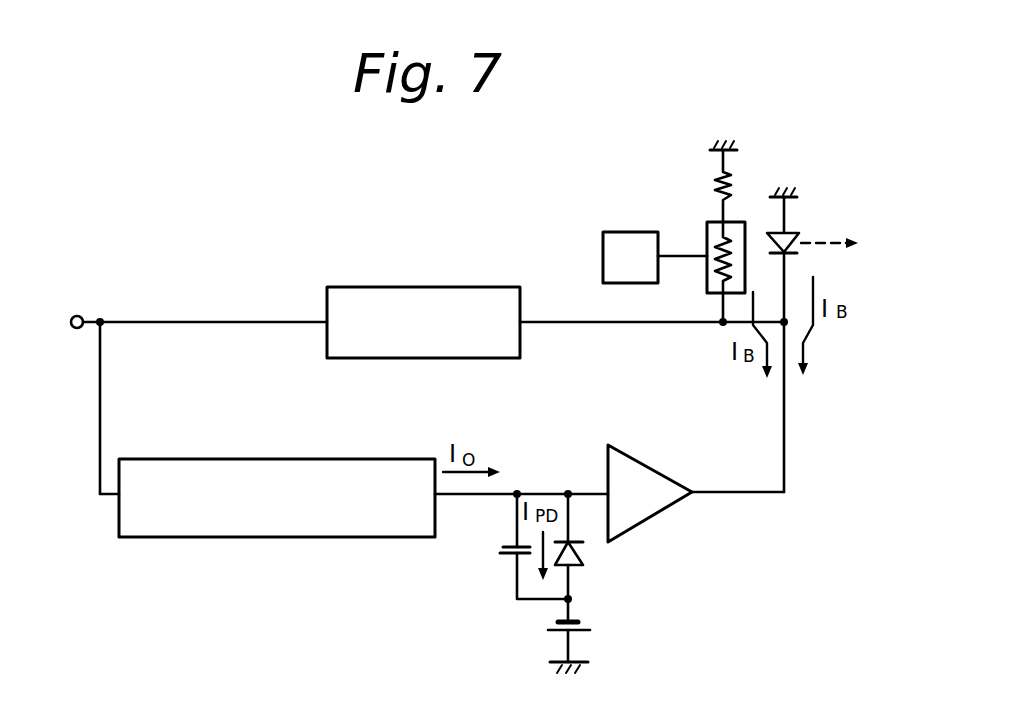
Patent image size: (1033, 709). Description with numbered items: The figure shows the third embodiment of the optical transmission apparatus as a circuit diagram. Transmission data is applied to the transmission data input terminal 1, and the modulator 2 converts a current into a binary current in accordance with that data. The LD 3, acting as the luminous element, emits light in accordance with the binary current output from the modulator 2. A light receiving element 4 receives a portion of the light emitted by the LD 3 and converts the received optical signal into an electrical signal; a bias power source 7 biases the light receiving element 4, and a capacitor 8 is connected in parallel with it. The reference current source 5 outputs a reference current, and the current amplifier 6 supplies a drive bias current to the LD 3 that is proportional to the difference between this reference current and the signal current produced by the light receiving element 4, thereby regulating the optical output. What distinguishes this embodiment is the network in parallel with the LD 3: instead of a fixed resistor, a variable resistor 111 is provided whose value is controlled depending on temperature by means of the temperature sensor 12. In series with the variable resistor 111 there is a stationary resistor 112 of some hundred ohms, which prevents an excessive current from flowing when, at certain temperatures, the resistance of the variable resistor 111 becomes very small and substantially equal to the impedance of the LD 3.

The transmission data input terminal 1 is at (77, 316).
The modulator 2 is at (432, 287).
The LD (laser diode luminous element) 3 is at (795, 240).
The light receiving element 4 is at (577, 565).
The reference current source 5 is at (318, 537).
The current amplifier 6 is at (640, 456).
The bias power source 7 is at (592, 627).
The capacitor 8 is at (501, 550).
The variable resistor 111 is at (707, 290).
The stationary resistor 112 is at (728, 182).
The temperature sensor 12 is at (627, 232).